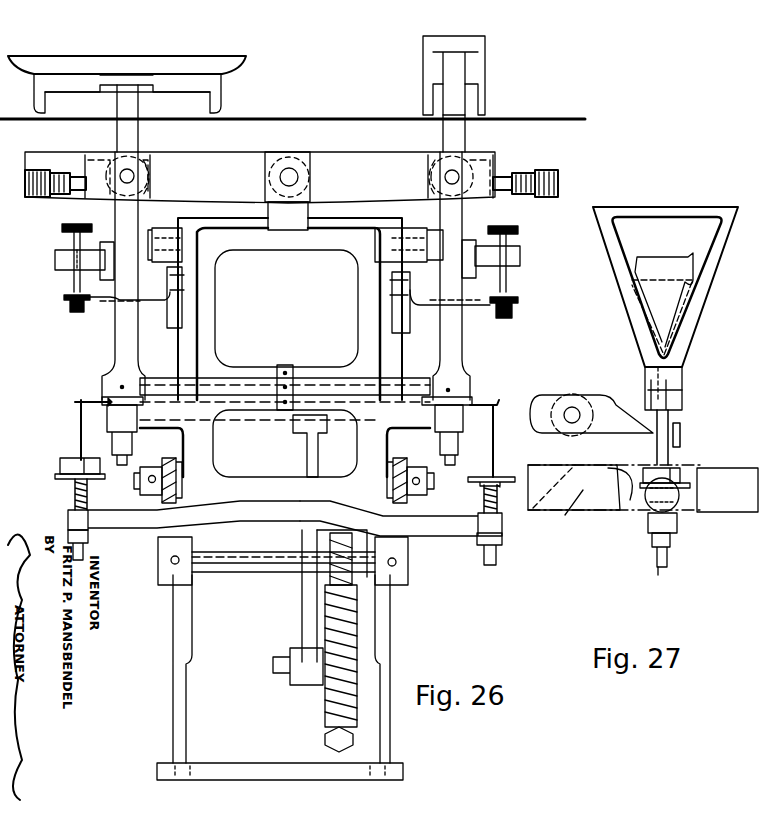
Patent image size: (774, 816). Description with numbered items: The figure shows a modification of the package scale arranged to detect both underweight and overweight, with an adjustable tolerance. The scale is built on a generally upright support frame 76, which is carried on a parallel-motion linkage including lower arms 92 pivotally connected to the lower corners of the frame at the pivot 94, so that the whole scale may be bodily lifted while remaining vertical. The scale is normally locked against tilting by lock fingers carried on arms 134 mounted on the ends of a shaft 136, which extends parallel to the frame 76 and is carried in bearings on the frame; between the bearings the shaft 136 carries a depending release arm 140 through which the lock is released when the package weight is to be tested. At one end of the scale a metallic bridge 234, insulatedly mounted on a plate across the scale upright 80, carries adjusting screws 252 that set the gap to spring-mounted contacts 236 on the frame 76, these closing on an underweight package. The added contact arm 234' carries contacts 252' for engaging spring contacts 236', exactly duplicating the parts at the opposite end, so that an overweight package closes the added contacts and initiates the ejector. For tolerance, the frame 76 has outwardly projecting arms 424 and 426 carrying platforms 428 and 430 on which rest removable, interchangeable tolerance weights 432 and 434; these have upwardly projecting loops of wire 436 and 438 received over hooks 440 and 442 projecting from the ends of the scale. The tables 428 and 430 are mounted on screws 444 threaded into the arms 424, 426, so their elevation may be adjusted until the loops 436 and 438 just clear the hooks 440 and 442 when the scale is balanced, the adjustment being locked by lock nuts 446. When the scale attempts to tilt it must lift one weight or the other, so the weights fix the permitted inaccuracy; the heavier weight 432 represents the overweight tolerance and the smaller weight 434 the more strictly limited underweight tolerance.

In FIG. 26, the support frame 76 is at (358, 323).
In FIG. 27, the support frame 76 is at (638, 327).
In FIG. 27, the scale upright 80 is at (716, 278).
In FIG. 26, the arms 92 is at (167, 458).
In FIG. 27, the arms 92 is at (571, 513).
In FIG. 27, the pivotal connection 94 is at (655, 495).
In FIG. 27, the arms 134 is at (608, 418).
In FIG. 27, the shaft 136 is at (572, 408).
In FIG. 27, the release arm 140 is at (598, 465).
In FIG. 26, the metallic bridge 234 is at (62, 261).
In FIG. 26, the contact arm 234' is at (519, 259).
In FIG. 26, the scale contacts 236 is at (91, 310).
In FIG. 26, the spring contacts 236' is at (489, 304).
In FIG. 26, the adjusting screws 252 is at (53, 258).
In FIG. 26, the contacts 252' is at (526, 259).
In FIG. 26, the arm 424 is at (142, 535).
In FIG. 27, the arm 424 is at (677, 522).
In FIG. 26, the arm 426 is at (450, 537).
In FIG. 26, the platform 428 is at (58, 480).
In FIG. 27, the platform 428 is at (690, 478).
In FIG. 26, the platform 430 is at (500, 487).
In FIG. 26, the tolerance weight 432 is at (58, 466).
In FIG. 27, the tolerance weight 432 is at (680, 470).
In FIG. 26, the tolerance weight 434 is at (500, 477).
In FIG. 26, the loop of wire 436 is at (80, 418).
In FIG. 27, the loop of wire 436 is at (670, 447).
In FIG. 26, the loop of wire 438 is at (494, 438).
In FIG. 26, the hook 440 is at (76, 401).
In FIG. 27, the hook 440 is at (667, 403).
In FIG. 26, the hook 442 is at (503, 400).
In FIG. 26, the screws 444 is at (88, 495).
In FIG. 27, the screws 444 is at (661, 567).
In FIG. 26, the lock nuts 446 is at (88, 540).
In FIG. 27, the lock nuts 446 is at (652, 540).